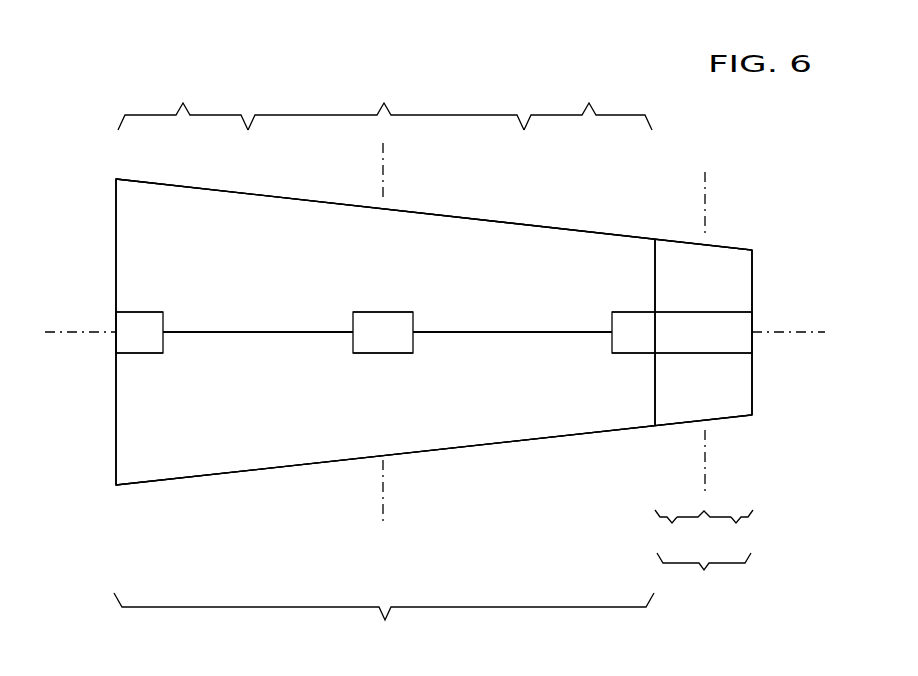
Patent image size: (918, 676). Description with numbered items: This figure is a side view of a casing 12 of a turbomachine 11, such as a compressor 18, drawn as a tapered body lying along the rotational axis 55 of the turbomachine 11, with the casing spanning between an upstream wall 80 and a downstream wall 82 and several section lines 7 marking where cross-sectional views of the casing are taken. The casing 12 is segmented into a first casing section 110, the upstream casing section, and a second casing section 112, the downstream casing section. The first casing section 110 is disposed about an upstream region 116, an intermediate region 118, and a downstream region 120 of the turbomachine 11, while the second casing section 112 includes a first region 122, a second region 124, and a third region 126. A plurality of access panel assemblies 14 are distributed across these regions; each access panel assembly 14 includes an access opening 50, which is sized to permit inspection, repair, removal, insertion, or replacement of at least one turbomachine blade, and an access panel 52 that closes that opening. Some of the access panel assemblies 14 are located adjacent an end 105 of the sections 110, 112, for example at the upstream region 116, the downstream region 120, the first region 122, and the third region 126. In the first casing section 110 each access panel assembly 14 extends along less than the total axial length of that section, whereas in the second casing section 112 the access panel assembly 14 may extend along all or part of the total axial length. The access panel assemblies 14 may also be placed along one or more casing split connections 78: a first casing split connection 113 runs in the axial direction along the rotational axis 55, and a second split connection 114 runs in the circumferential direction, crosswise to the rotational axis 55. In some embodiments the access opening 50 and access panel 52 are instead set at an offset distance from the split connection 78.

The section line 7- 7 is at (383, 143).
The turbomachine 11 is at (548, 44).
The casing 12 is at (110, 493).
The access panel assembly 14 is at (153, 291).
The compressor 18 is at (291, 39).
The access opening 50 is at (138, 312).
The access panel 52 is at (138, 337).
The rotational axis 55 is at (788, 334).
The casing split connection 78 is at (262, 333).
The leading edge wall 80 is at (116, 201).
The trailing edge wall 82 is at (116, 450).
The end 105 is at (116, 415).
The first casing section 110 is at (384, 626).
The second casing section 112 is at (704, 575).
The first casing split connection 113 is at (262, 333).
The second split connection 114 is at (655, 262).
The upstream region 116 is at (183, 102).
The intermediate region 118 is at (386, 102).
The downstream region 120 is at (588, 102).
The first region 122 is at (671, 524).
The second region 124 is at (704, 532).
The third region 126 is at (737, 524).